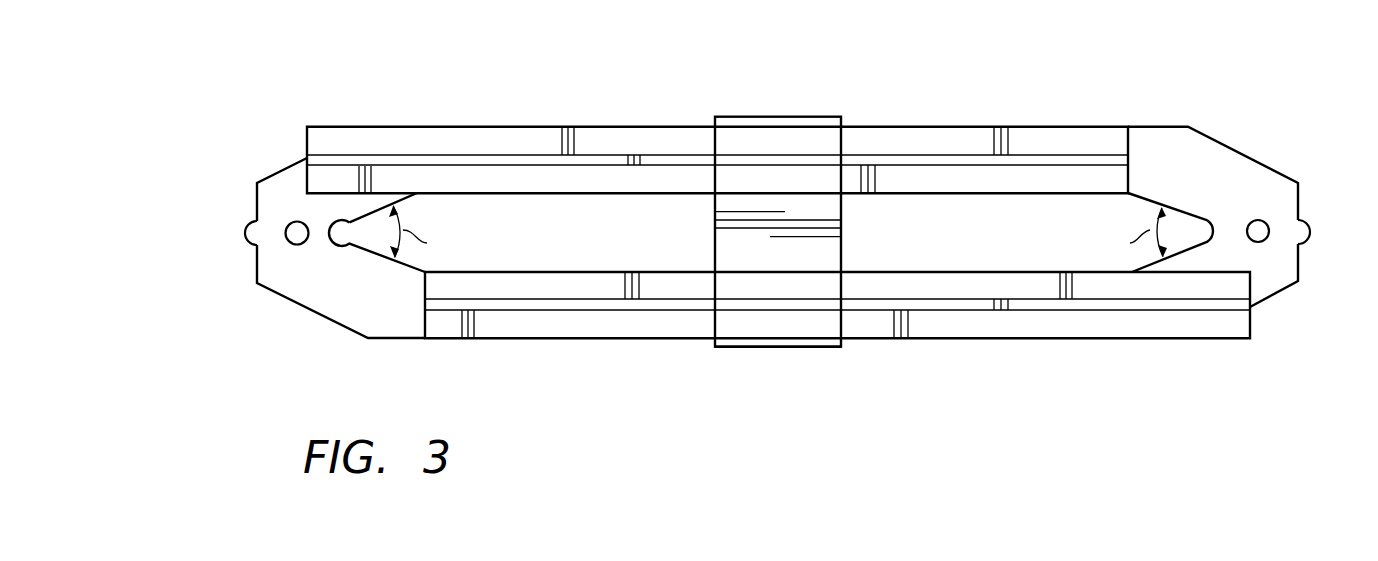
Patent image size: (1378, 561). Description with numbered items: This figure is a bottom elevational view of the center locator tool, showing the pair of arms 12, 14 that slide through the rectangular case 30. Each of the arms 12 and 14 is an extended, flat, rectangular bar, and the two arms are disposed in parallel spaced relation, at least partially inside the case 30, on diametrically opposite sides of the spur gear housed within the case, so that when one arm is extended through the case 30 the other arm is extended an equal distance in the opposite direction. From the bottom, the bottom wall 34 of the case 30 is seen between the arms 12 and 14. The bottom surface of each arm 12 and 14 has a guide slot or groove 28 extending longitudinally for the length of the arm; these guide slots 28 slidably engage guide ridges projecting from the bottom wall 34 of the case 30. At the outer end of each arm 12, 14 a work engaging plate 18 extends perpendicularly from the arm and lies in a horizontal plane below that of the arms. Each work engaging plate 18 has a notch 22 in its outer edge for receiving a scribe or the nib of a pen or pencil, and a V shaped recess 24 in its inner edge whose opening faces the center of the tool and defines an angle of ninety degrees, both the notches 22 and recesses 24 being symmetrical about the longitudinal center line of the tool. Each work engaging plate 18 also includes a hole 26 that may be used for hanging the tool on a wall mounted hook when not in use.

The arm 12 is at (940, 127).
The arm 14 is at (973, 338).
The work engaging plate 18 is at (316, 315).
The notch 22 is at (260, 231).
The V shaped recess 24 is at (418, 200).
The hole 26 is at (288, 245).
The guide slot 28 is at (490, 153).
The case 30 is at (740, 347).
The bottom wall 34 is at (743, 117).